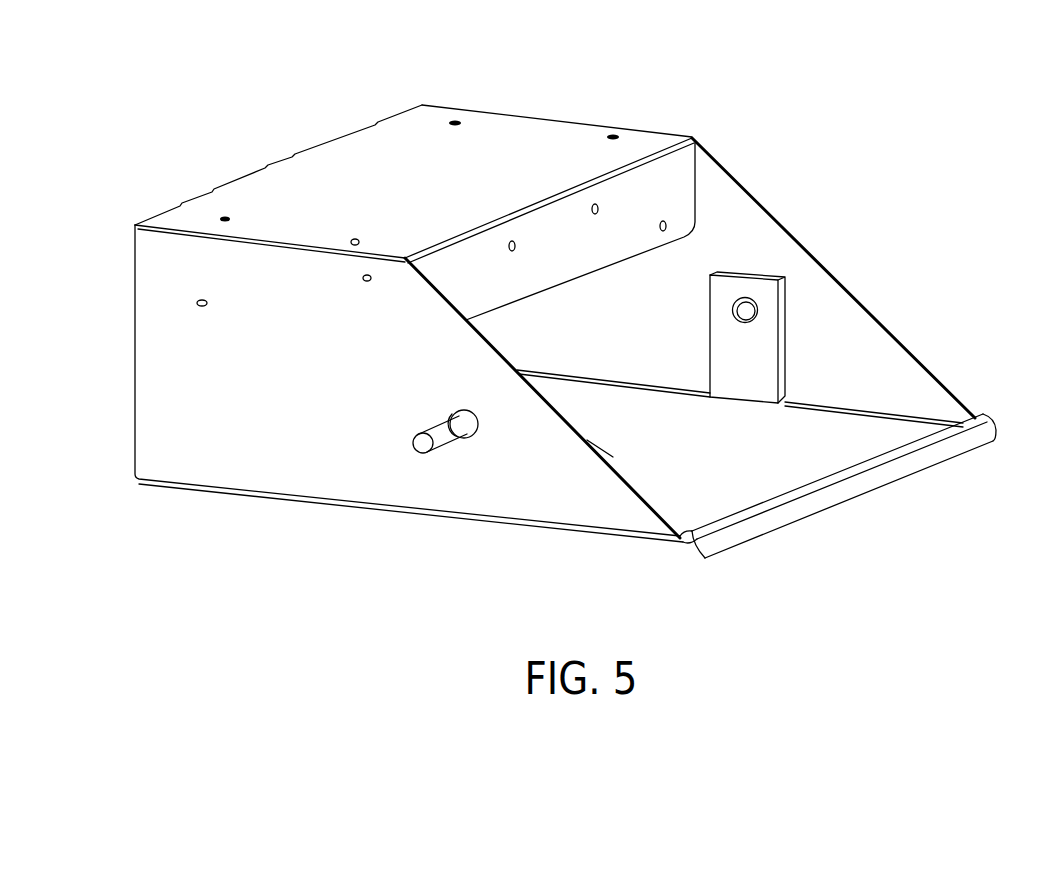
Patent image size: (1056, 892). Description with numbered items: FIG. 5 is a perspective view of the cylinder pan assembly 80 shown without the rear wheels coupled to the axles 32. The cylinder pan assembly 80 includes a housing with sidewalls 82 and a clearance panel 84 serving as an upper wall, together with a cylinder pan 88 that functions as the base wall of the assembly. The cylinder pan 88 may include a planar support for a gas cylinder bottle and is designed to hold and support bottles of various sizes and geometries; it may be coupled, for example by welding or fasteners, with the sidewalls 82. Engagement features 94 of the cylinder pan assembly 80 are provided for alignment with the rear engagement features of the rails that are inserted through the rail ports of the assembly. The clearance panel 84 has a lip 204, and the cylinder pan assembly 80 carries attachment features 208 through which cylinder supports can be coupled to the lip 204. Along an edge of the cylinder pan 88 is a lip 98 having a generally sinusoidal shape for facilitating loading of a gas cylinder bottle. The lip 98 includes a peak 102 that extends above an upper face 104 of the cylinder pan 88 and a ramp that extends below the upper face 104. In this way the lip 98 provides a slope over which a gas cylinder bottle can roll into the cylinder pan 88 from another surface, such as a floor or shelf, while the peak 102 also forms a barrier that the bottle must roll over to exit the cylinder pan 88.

The cylinder pan assembly 80 is at (136, 80).
The sidewalls 82 is at (157, 378).
The clearance panel 84 is at (259, 190).
The cylinder pan 88 is at (897, 425).
The engagement features 94 is at (228, 221).
The lip 98 is at (983, 428).
The peak 102 is at (686, 534).
The upper face 104 is at (698, 552).
The lip of the clearance panel 204 is at (687, 181).
The attachment features 208 is at (662, 221).
The axles 32 is at (741, 311).